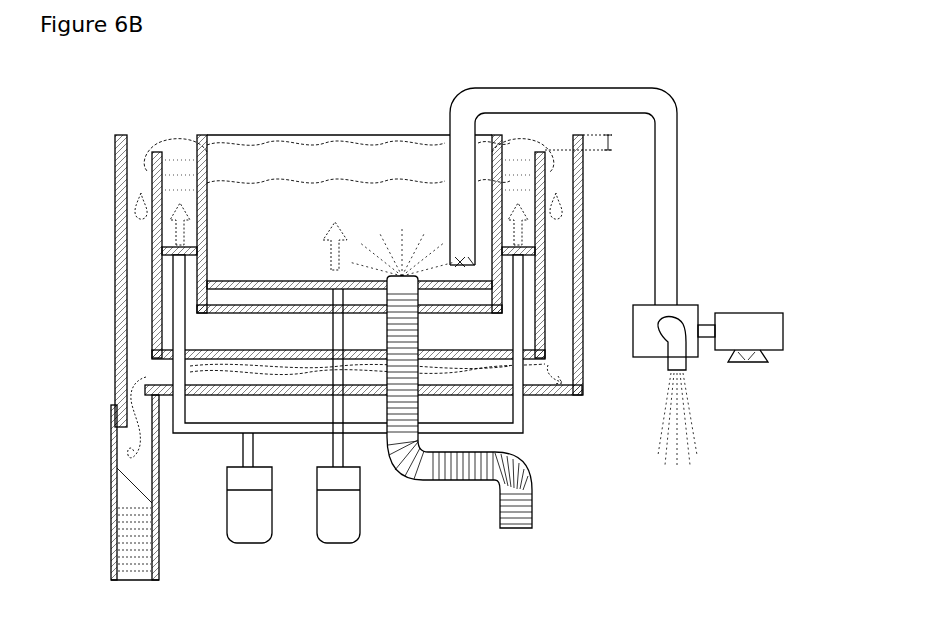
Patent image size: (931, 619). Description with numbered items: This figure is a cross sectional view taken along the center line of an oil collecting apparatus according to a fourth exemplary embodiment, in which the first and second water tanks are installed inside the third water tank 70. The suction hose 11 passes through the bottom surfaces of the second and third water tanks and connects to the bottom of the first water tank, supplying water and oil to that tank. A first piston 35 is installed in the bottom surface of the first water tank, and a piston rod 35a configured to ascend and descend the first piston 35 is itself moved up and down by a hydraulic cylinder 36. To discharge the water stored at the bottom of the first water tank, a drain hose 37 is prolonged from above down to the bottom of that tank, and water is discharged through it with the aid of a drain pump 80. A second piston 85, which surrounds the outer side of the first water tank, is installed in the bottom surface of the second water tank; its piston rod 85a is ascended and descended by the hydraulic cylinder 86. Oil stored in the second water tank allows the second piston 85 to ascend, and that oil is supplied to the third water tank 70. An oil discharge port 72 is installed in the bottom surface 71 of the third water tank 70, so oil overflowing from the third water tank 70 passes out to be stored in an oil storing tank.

The third water tank 70 is at (115, 150).
The oil discharge port 72 is at (113, 397).
The bottom surface 71 is at (584, 386).
The second piston 85 is at (152, 237).
The first piston 35 is at (210, 272).
The piston rod 85a is at (199, 430).
The hydraulic cylinder 86 is at (250, 546).
The piston rod 35a is at (345, 447).
The hydraulic cylinder 36 is at (345, 546).
The suction hose 11 is at (528, 470).
The drain hose 37 is at (678, 168).
The drain pump 80 is at (706, 301).